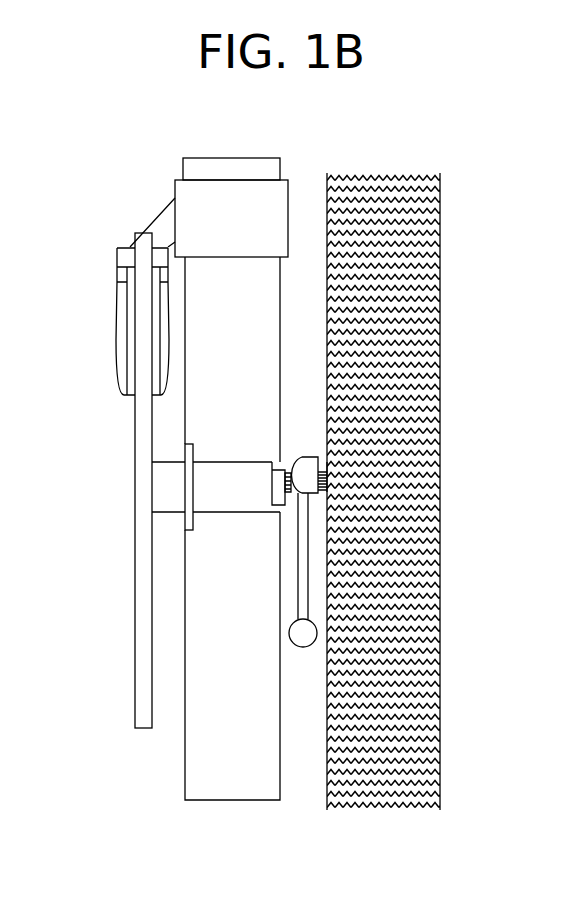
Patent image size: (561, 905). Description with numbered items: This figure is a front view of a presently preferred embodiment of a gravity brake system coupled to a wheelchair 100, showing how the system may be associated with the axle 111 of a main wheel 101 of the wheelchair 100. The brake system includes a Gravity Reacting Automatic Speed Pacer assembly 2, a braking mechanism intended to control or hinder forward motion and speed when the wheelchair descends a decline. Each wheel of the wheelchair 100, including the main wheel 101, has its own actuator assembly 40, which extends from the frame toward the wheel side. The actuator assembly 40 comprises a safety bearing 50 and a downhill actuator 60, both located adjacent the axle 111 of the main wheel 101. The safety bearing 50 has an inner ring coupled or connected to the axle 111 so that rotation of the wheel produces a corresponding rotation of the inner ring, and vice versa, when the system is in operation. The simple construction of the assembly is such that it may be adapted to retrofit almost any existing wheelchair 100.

The Gravity Reacting Automatic Speed Pacer assembly 2 is at (131, 173).
The actuator assembly 40 is at (247, 468).
The safety bearing 50 is at (273, 460).
The downhill actuator 60 is at (305, 480).
The wheelchair 100 is at (243, 795).
The main wheel 101 is at (435, 678).
The axle 111 is at (330, 457).